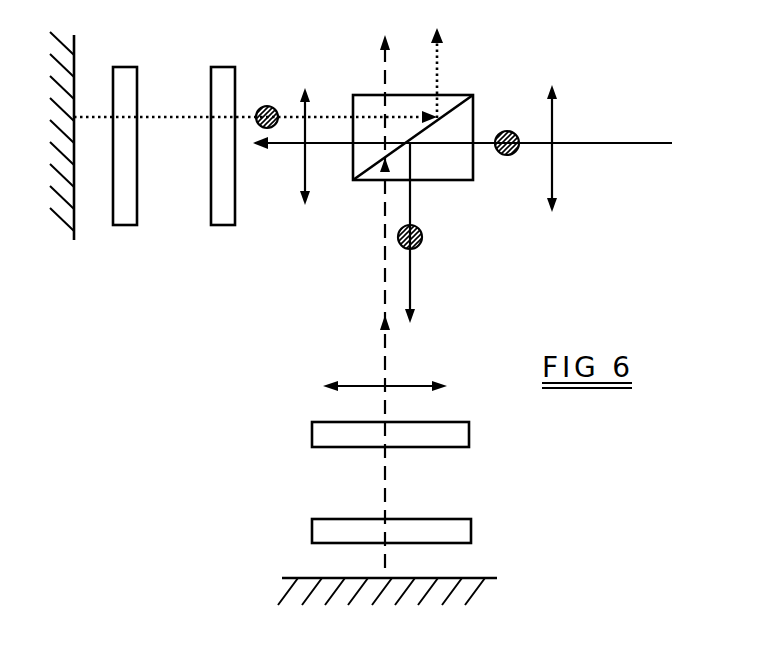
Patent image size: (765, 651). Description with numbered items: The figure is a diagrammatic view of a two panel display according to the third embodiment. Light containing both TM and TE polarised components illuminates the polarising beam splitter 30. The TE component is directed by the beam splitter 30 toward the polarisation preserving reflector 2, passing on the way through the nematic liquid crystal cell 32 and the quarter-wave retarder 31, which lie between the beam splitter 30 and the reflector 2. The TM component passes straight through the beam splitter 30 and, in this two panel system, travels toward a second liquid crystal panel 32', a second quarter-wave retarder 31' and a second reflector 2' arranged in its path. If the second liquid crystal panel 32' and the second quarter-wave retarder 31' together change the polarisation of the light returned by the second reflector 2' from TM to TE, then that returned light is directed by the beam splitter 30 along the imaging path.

The polarisation preserving reflector 2 is at (360, 577).
The second reflector 2' is at (57, 166).
The polarising beam splitter 30 is at (470, 93).
The λ/4 retarder 31 is at (333, 512).
The second λ/4 retarder 31' is at (137, 205).
The nematic liquid crystal cell 32 is at (348, 426).
The second liquid crystal panel 32' is at (230, 192).